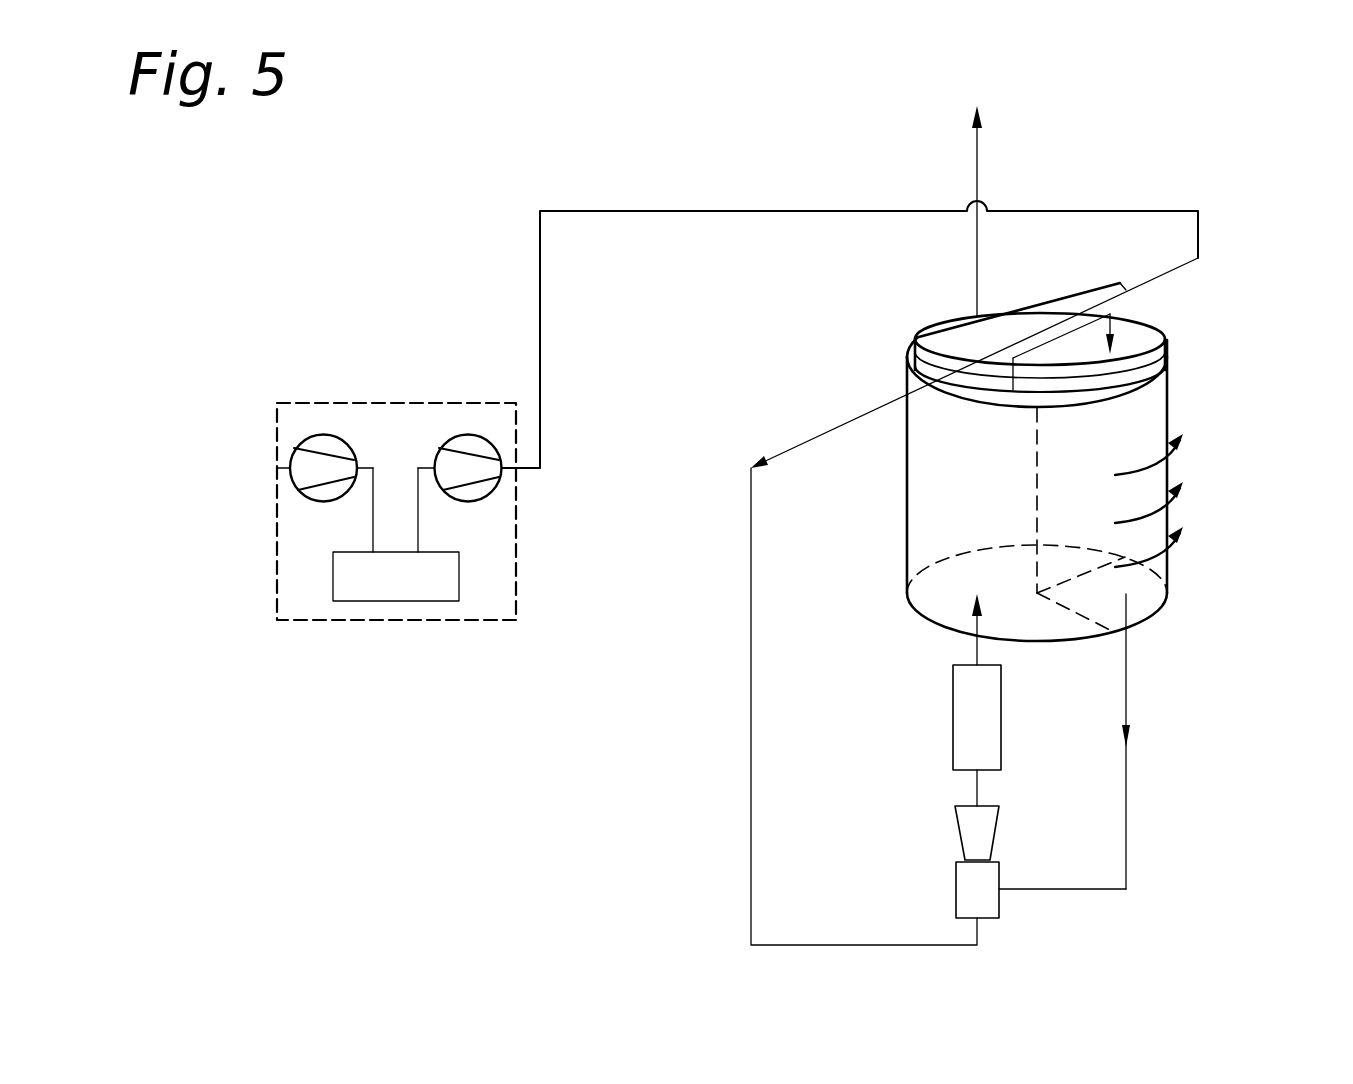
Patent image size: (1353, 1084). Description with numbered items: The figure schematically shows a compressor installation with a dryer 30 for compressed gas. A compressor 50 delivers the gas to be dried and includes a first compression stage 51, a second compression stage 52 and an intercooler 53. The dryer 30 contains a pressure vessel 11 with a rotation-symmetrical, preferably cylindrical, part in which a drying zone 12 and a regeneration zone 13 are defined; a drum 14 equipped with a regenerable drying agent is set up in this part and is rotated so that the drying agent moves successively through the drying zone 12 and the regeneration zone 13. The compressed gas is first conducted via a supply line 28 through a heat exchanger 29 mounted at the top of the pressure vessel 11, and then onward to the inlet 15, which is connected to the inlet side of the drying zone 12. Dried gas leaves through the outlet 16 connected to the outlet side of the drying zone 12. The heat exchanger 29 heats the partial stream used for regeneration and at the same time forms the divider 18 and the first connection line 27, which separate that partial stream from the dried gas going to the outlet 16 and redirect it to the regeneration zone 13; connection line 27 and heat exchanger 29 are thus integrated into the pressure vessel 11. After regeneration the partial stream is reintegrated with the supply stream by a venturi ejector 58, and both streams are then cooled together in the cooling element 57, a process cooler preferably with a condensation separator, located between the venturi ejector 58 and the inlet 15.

The pressure vessel 11 is at (1180, 662).
The drying zone 12 is at (940, 540).
The regeneration zone 13 is at (1152, 420).
The drum 14 is at (1167, 393).
The inlet 15 is at (977, 650).
The outlet 16 is at (977, 155).
The divider 18 is at (950, 333).
The first connection line 27 is at (1083, 325).
The supply line 28 is at (1198, 236).
The heat exchanger 29 is at (1145, 313).
The dryer 30 is at (633, 142).
The compressor 50 is at (377, 417).
The first compression stage 51 is at (302, 464).
The second compression stage 52 is at (463, 440).
The intercooler 53 is at (355, 601).
The cooling element 57 is at (990, 752).
The venturi ejector 58 is at (993, 910).